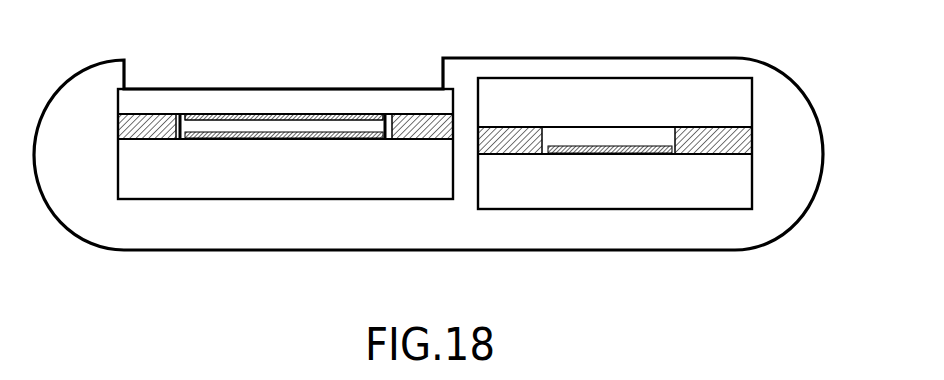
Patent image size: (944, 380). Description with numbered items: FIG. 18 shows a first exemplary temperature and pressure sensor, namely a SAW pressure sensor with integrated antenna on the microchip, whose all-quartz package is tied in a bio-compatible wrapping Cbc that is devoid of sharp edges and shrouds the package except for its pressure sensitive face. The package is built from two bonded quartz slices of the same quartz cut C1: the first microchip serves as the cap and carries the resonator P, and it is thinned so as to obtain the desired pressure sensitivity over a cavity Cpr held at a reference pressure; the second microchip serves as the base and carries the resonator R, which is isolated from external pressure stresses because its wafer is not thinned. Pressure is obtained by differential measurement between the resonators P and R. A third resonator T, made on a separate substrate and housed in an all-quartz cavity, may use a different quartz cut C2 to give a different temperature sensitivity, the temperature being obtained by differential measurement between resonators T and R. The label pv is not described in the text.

The bio-compatible wrapping Cbc is at (778, 210).
The quartz cut C1 is at (285, 144).
The quartz cut C2 is at (615, 143).
The cavity Cpr is at (203, 113).
The resonator P is at (283, 116).
The resonator R is at (287, 139).
The spacer pv is at (757, 133).
The third resonator T is at (612, 154).